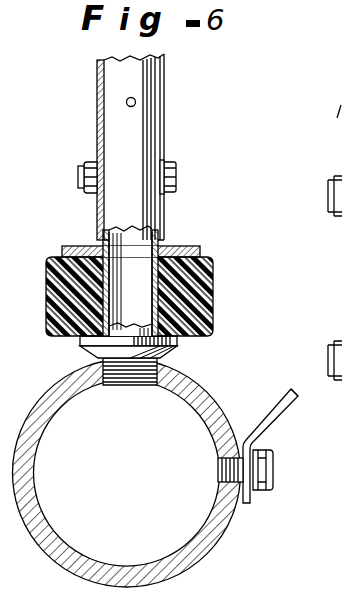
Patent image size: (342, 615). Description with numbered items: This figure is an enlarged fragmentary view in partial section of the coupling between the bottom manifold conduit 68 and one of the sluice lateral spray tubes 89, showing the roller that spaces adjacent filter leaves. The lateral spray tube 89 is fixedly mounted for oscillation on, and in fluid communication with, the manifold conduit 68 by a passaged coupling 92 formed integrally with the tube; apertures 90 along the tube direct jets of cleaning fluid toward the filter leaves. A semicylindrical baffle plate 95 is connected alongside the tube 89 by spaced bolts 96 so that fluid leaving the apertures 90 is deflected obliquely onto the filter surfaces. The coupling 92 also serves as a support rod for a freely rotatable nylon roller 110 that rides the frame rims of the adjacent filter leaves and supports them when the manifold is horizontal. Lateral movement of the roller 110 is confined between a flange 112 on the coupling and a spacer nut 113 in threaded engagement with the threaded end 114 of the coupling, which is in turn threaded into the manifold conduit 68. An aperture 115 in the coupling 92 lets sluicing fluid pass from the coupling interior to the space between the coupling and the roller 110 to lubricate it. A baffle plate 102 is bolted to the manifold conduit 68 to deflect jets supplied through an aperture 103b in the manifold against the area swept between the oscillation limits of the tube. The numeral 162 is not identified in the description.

The bottom manifold conduit 68 is at (200, 389).
The lateral spray tube 89 is at (134, 143).
The apertures 90 is at (135, 101).
The passaged coupling 92 is at (165, 247).
The semicylindrical baffle plate 95 is at (97, 128).
The bolts 96 is at (172, 174).
The baffle plate 102 is at (280, 408).
The aperture 103b is at (245, 438).
The roller 110 is at (204, 302).
The flange 112 is at (86, 246).
The spacer nut 113 is at (86, 347).
The threaded end 114 is at (135, 386).
The aperture 115 is at (165, 286).
The fastener 162 is at (327, 242).